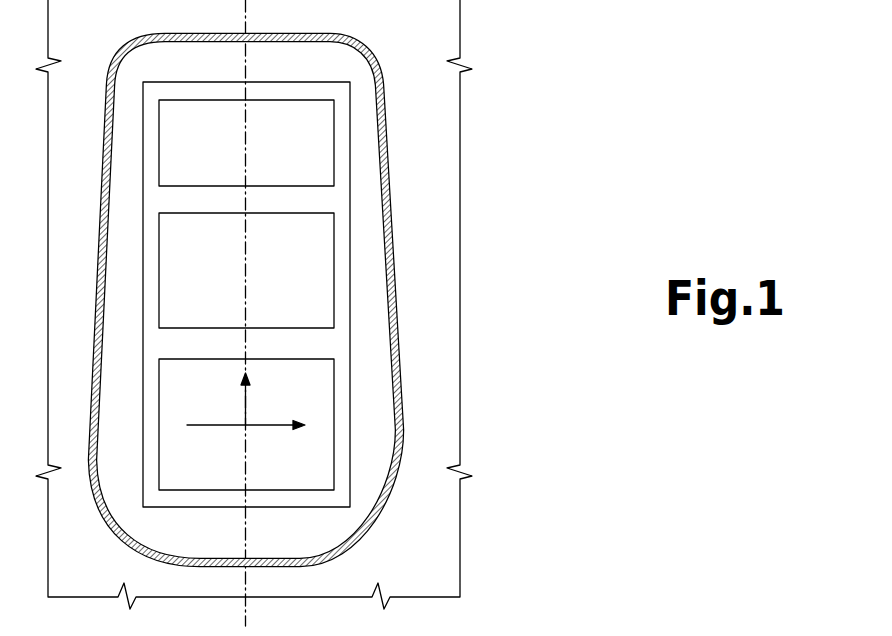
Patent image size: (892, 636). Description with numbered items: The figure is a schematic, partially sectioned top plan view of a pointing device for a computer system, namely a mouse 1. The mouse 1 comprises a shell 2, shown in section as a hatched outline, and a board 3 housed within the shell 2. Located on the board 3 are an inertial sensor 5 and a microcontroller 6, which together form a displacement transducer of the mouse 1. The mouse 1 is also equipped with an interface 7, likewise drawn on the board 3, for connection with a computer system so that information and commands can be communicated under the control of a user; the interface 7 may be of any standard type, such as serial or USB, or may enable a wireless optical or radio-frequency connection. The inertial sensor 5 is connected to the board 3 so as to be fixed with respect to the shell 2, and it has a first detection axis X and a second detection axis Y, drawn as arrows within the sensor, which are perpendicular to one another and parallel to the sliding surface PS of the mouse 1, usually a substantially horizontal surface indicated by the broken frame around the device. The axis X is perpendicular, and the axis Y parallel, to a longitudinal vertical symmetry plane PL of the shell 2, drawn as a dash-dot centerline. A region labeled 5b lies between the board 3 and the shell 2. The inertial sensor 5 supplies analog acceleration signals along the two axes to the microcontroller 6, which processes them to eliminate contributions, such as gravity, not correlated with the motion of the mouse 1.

The mouse 1 is at (318, 300).
The shell 2 is at (372, 522).
The board 3 is at (349, 200).
The inertial sensor 5 is at (233, 485).
The sensor area 5b is at (371, 411).
The microcontroller 6 is at (324, 295).
The interface 7 is at (167, 137).
The sliding surface PS is at (462, 0).
The longitudinal symmetry plane PL is at (247, 19).